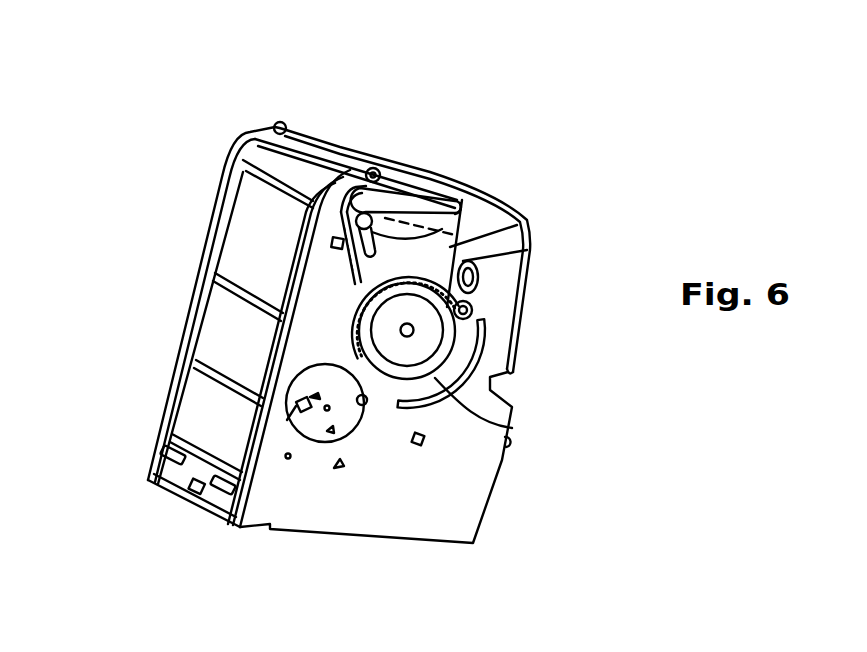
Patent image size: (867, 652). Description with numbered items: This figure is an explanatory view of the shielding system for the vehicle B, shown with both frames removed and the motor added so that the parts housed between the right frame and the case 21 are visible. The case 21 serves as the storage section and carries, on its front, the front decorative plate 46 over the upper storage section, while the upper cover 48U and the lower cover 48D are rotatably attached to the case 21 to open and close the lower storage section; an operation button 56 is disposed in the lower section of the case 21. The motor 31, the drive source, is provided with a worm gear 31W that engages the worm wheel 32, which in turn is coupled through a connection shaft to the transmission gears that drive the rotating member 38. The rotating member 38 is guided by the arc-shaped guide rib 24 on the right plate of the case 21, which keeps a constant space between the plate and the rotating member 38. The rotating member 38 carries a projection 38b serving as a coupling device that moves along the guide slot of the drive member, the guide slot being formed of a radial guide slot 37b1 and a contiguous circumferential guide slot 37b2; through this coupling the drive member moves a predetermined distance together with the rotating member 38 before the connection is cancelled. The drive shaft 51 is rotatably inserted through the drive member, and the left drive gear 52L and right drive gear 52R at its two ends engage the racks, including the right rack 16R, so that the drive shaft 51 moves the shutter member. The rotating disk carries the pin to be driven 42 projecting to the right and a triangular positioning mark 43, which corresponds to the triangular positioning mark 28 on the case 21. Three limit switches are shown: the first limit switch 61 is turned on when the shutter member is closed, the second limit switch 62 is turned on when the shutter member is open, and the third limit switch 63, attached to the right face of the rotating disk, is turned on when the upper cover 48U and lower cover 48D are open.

The front decorative plate 46 is at (273, 155).
The upper cover 48U is at (220, 340).
The lower cover 48D is at (192, 407).
The vehicle B is at (139, 449).
The operation button 56 is at (194, 491).
The left drive gear 52L is at (281, 121).
The drive shaft 51 is at (334, 150).
The right drive gear 52R is at (379, 169).
The radial guide slot 37b1 is at (462, 185).
The circumferential guide slot 37b2 is at (462, 192).
The projection 38b is at (355, 218).
The first limit switch 61 is at (329, 246).
The rotating member 38 is at (512, 214).
The guide rib 24 is at (512, 428).
The worm wheel 32 is at (469, 318).
The motor 31 is at (474, 284).
The worm gear 31W is at (478, 268).
The right rack 16R is at (526, 348).
The case 21 is at (472, 524).
The triangular positioning mark 43 is at (333, 428).
The third limit switch 63 is at (287, 420).
The triangular positioning mark 28 is at (339, 468).
The pin to be driven 42 is at (367, 403).
The second limit switch 62 is at (424, 444).